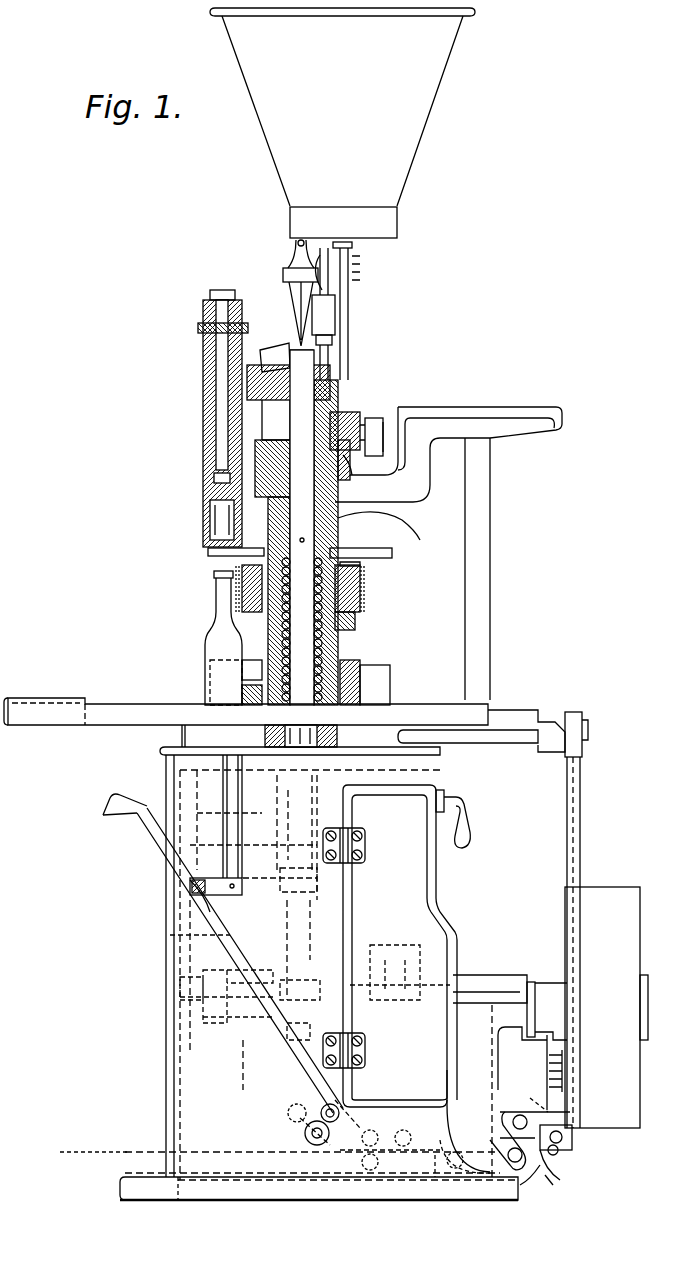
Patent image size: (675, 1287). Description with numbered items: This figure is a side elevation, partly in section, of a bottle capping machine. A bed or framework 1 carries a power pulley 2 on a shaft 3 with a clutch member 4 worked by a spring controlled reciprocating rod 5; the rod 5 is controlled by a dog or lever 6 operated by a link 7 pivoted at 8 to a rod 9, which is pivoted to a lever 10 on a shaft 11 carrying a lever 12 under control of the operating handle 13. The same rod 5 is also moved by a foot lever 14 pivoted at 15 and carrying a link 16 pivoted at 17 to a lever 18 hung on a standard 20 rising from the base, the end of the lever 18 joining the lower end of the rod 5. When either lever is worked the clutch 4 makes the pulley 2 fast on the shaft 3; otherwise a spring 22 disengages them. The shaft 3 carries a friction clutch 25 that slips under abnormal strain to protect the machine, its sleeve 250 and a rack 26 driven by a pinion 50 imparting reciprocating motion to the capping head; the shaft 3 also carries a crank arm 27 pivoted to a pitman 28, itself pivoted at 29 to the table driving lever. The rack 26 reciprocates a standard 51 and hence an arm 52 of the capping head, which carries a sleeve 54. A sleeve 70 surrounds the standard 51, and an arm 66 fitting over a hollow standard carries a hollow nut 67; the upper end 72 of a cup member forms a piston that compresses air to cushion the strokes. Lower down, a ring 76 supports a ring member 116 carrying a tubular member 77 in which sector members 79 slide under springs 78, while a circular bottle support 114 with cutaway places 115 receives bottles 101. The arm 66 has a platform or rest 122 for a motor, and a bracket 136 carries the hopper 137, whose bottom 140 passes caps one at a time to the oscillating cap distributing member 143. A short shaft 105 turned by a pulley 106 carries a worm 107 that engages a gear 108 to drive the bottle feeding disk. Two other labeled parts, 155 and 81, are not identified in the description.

The hopper 137 is at (421, 122).
The bottom of the hopper 140 is at (392, 226).
The oscillating cap distributing member 143 is at (297, 258).
The flange and connecting arms 155 is at (296, 302).
The bracket 136 is at (352, 311).
The sleeve 54 is at (207, 522).
The ring or tubular member 77 is at (218, 539).
The arm of the bottle capping head 52 is at (272, 400).
The sleeve 70 is at (328, 520).
The standard 51 is at (305, 660).
The platform or rest 122 is at (483, 406).
The hollow nut 67 is at (360, 480).
The arm 66 is at (410, 490).
The upper end of the cup member 72 is at (386, 532).
The sector members 79 is at (354, 550).
The springs 78 is at (362, 580).
The ring member 116 is at (362, 608).
The ring 76 is at (356, 620).
The left nut 81 is at (242, 588).
The bottles 101 is at (218, 636).
The circular bottle support 114 is at (360, 674).
The cutaway places 115 is at (392, 692).
The gear 108 is at (268, 730).
The worm 107 is at (325, 726).
The short shaft 105 is at (512, 752).
The pulley 106 is at (586, 722).
The power pulley 2 is at (628, 893).
The bed or framework 1 is at (195, 1074).
The foot lever 14 is at (145, 1172).
The standard 20 is at (348, 1188).
The link 16 is at (417, 1178).
The pivot 29 is at (188, 866).
The link or pitman 28 is at (170, 942).
The crank arm 27 is at (216, 1025).
The operating handle 13 is at (238, 944).
The rack 26 is at (292, 928).
The shaft 3 is at (276, 1036).
The lever 12 is at (322, 1106).
The lever 10 is at (305, 1133).
The shaft 11 is at (318, 1140).
The pivot 17 is at (403, 1128).
The pivot 15 is at (470, 1160).
The sleeve of the friction clutch 250 is at (355, 965).
The friction clutch member 25 is at (455, 935).
The pinion 50 is at (336, 978).
The clutch member 4 is at (548, 1012).
The spring 22 is at (546, 1080).
The spring controlled reciprocating rod 5 is at (530, 1095).
The rod 9 is at (503, 1128).
The lever 18 is at (565, 1150).
The pivot 8 is at (530, 1184).
The dog or lever 6 is at (561, 1173).
The link 7 is at (554, 1190).